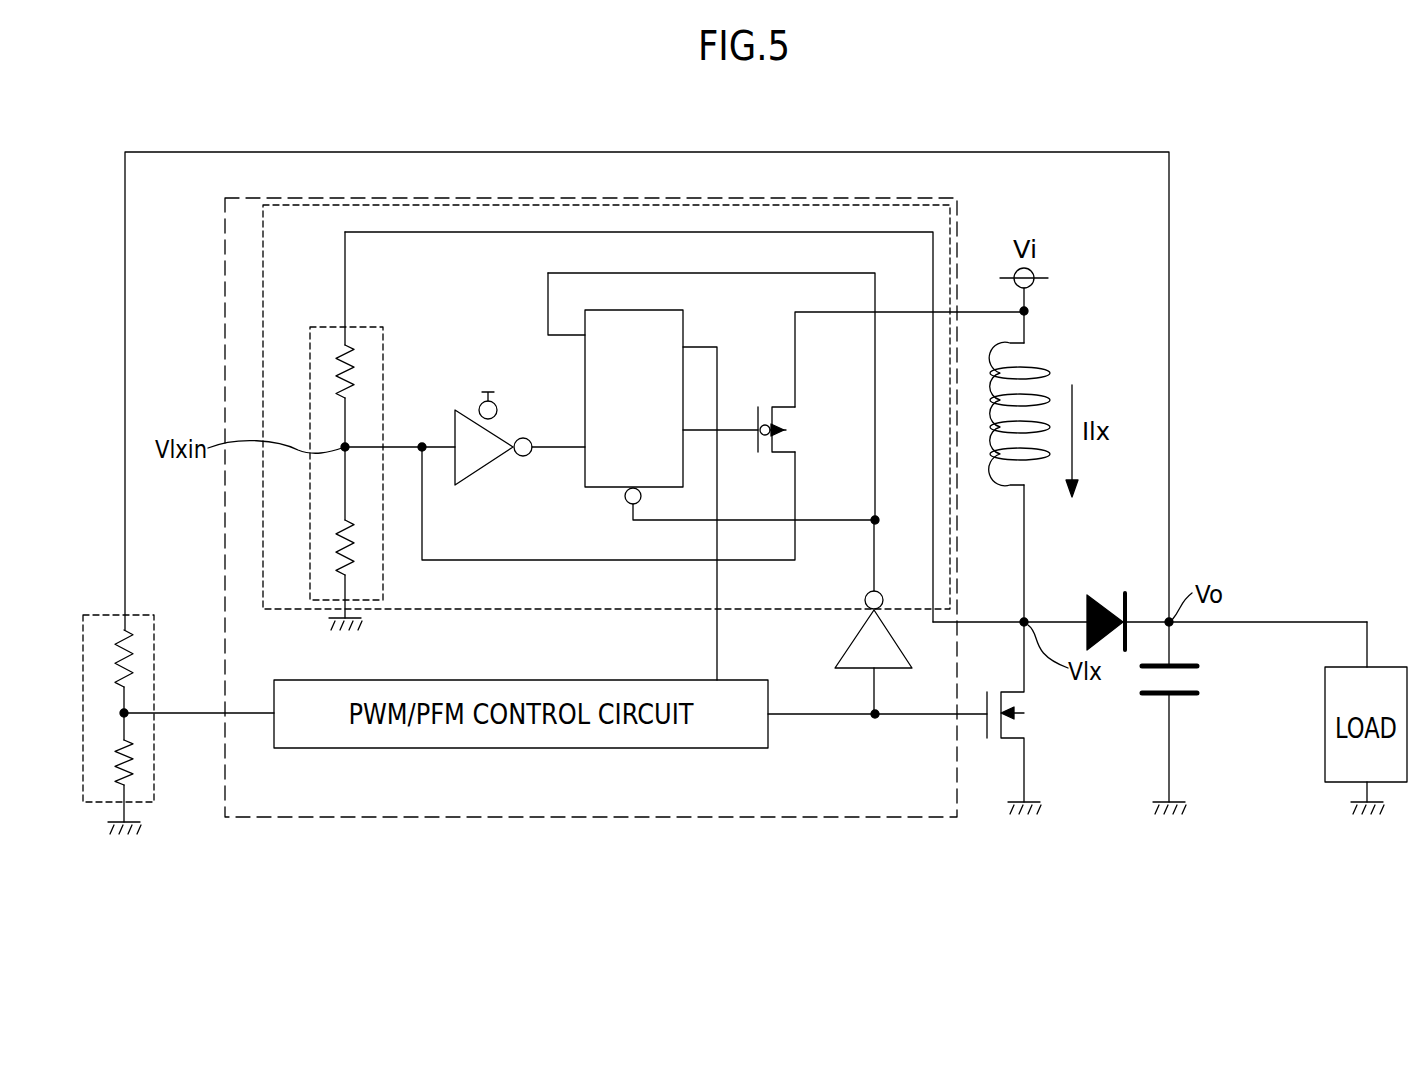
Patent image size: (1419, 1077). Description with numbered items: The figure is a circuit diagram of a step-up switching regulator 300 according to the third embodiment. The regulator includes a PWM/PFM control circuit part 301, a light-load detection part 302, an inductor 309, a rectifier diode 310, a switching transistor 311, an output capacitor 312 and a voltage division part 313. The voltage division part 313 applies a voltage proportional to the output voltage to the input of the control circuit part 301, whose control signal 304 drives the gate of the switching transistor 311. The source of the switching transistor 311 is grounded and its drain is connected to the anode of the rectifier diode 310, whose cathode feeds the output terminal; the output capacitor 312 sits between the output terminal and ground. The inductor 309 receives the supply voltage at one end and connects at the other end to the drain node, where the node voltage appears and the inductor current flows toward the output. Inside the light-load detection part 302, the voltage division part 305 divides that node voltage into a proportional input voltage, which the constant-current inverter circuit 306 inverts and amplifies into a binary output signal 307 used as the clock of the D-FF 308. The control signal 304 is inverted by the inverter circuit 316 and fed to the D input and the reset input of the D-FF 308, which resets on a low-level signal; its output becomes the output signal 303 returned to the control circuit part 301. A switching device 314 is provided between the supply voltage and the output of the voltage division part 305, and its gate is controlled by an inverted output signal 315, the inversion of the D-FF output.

The switching regulator 300 is at (1273, 101).
The PWM/PFM control circuit part 301 is at (523, 748).
The light-load detection part 302 is at (497, 612).
The output signal 303 is at (718, 638).
The control signal 304 is at (920, 717).
The voltage division part 305 is at (317, 327).
The constant-current inverter circuit 306 is at (480, 470).
The output signal 307 is at (555, 440).
The D-FF 308 is at (683, 322).
The inductor 309 is at (1047, 368).
The rectifier diode 310 is at (1098, 593).
The switching transistor 311 is at (1027, 722).
The output capacitor 312 is at (1198, 679).
The voltage division part 313 is at (93, 612).
The switching device 314 is at (800, 420).
The inverted output signal 315 is at (743, 433).
The inverter circuit 316 is at (895, 672).